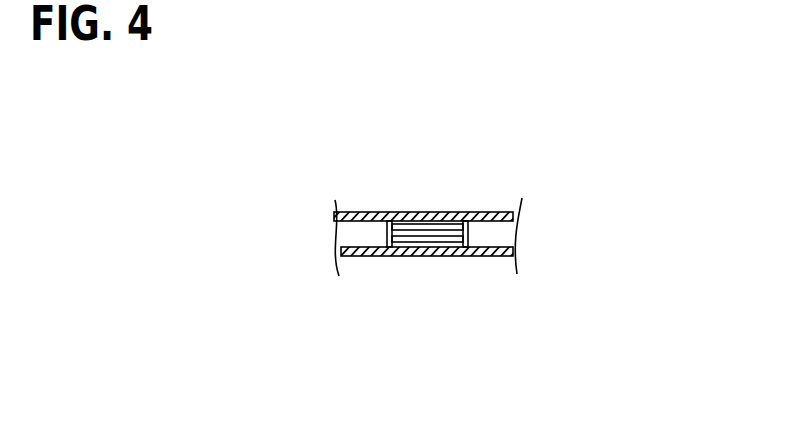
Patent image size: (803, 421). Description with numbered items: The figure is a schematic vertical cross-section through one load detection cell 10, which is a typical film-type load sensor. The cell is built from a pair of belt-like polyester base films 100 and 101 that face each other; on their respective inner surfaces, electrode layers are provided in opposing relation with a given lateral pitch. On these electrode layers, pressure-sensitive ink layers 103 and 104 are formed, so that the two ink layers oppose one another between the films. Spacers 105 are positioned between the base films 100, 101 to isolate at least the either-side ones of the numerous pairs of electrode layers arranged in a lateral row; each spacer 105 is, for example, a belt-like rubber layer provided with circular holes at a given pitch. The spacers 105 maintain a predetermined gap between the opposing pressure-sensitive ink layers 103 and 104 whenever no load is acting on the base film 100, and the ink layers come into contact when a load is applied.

The load detection cell 10 is at (402, 198).
The base film 100 is at (488, 213).
The base film 101 is at (487, 258).
The pressure-sensitive ink layer 103 is at (414, 224).
The pressure-sensitive ink layer 104 is at (431, 238).
The spacer 105 is at (490, 237).